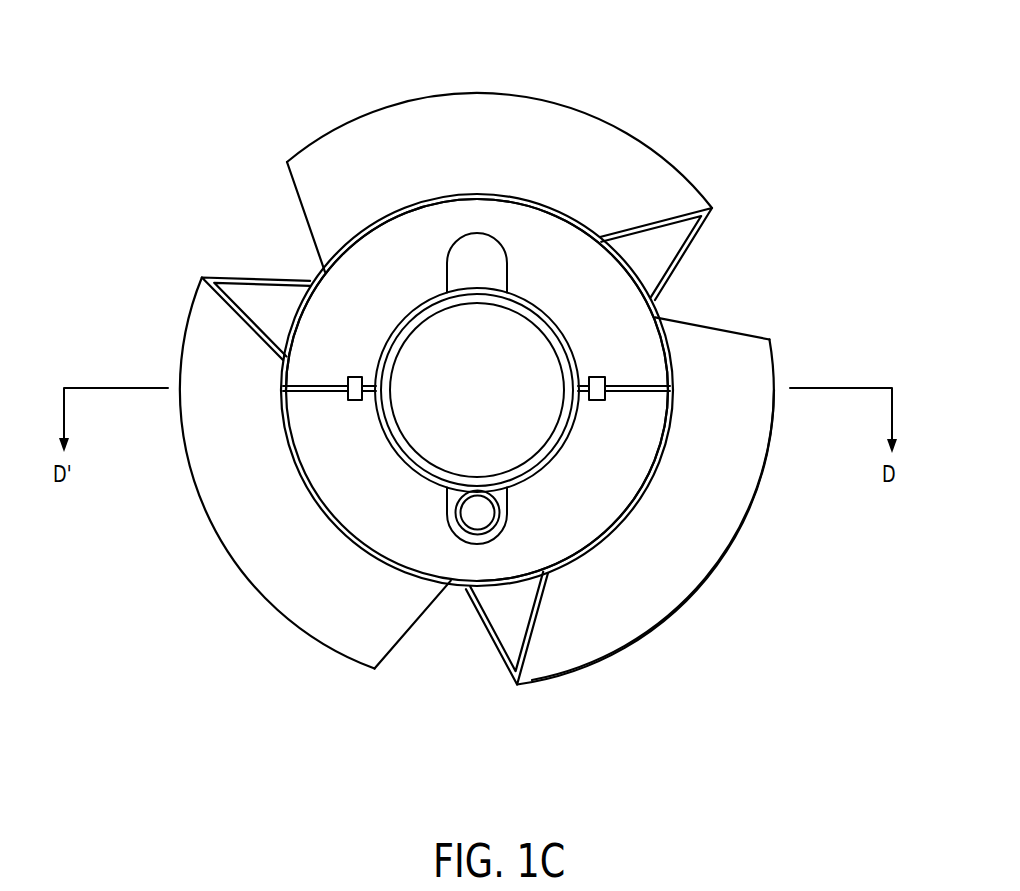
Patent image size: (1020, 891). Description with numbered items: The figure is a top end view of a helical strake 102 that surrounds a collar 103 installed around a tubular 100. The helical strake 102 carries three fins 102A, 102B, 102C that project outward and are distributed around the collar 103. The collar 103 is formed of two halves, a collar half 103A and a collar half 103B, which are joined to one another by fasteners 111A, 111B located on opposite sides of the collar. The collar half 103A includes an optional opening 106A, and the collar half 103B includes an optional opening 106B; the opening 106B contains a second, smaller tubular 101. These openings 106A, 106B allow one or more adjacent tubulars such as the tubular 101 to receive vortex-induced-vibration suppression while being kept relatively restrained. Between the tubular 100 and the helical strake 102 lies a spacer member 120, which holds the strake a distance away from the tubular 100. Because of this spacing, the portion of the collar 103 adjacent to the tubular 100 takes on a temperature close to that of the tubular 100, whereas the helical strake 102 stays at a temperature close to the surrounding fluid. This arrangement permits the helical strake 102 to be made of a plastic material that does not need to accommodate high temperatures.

The tubular 100 is at (547, 333).
The tubular 101 is at (472, 517).
The helical strake 102 is at (715, 578).
The fin 102A is at (627, 622).
The fin 102B is at (230, 514).
The fin 102C is at (484, 106).
The collar 103 is at (357, 307).
The collar half 103A is at (628, 342).
The collar half 103B is at (625, 445).
The opening 106A is at (480, 265).
The opening 106B is at (497, 493).
The fastener 111A is at (348, 381).
The fastener 111B is at (607, 378).
The spacer member 120 is at (385, 258).